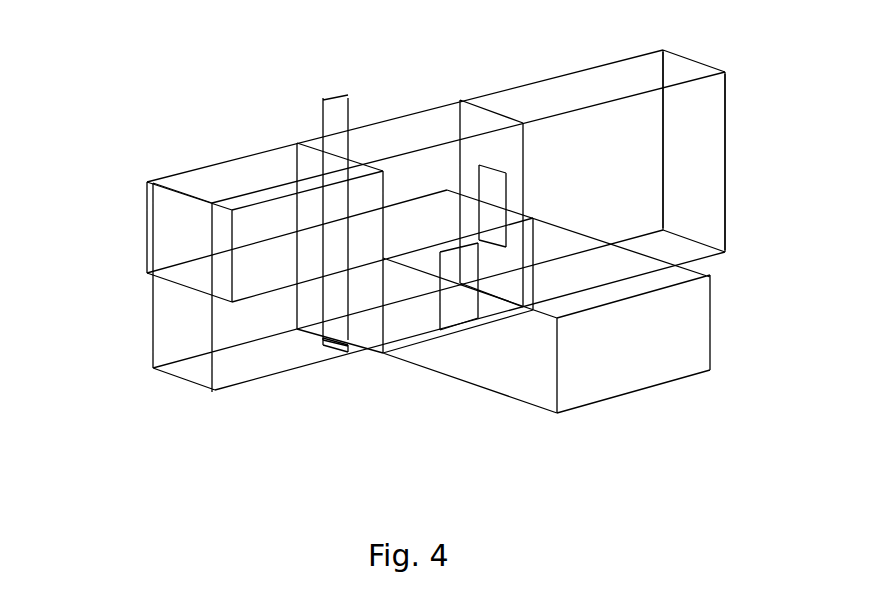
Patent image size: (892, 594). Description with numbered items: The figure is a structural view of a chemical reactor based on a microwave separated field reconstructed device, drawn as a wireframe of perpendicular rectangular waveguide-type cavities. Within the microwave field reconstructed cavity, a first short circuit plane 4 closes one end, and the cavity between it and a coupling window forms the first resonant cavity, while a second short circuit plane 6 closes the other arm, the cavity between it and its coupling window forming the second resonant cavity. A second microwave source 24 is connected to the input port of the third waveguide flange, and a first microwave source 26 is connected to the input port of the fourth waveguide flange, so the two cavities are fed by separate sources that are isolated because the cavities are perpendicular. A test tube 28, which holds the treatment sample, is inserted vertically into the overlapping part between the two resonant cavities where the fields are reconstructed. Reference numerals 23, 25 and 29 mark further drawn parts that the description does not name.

The first short circuit plane 4 is at (144, 213).
The second short circuit plane 6 is at (177, 327).
The bracket block 23 is at (488, 163).
The second microwave source 24 is at (707, 228).
The base plate 25 is at (432, 342).
The first microwave source 26 is at (600, 366).
The test tube 28 is at (337, 110).
The pin foot / stop 29 is at (333, 322).